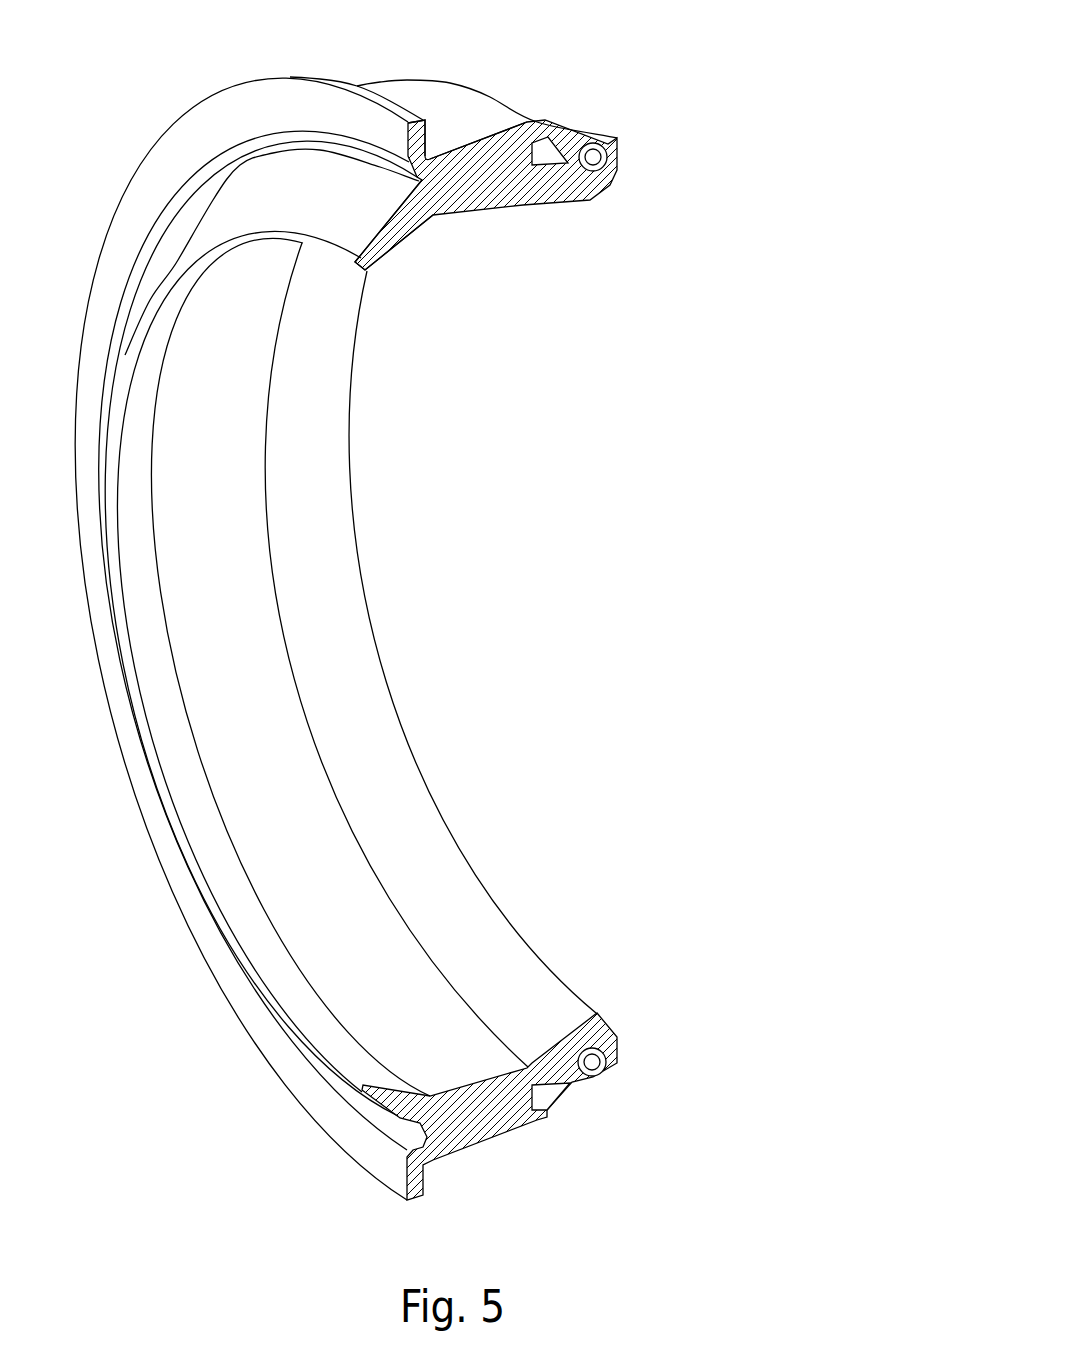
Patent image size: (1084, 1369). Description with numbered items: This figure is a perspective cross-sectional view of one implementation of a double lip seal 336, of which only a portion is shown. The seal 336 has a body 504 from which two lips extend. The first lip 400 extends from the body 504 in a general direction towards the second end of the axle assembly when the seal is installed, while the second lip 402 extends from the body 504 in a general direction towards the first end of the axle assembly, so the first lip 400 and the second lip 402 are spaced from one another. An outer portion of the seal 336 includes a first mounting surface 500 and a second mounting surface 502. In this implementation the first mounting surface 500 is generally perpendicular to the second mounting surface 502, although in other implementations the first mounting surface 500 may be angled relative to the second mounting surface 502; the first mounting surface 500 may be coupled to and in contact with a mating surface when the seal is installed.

The double lip seal 336 is at (786, 451).
The first lip 400 is at (366, 270).
The second lip 402 is at (590, 202).
The first mounting surface 500 is at (486, 116).
The second mounting surface 502 is at (438, 127).
The body 504 is at (488, 178).